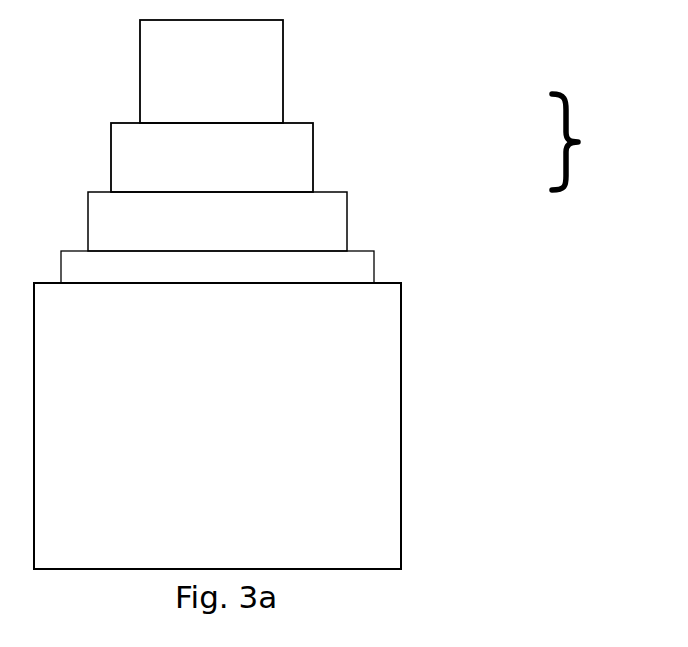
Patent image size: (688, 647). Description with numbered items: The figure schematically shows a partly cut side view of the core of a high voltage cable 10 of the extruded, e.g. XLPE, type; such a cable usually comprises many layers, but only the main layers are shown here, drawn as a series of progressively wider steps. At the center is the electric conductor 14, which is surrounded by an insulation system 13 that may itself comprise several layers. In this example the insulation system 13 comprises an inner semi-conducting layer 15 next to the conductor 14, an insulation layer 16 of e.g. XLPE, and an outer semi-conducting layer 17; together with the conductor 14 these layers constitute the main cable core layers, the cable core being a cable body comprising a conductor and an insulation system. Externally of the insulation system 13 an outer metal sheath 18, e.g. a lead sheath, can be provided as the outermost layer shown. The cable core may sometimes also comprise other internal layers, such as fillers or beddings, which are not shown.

The cable 10 is at (440, 415).
The insulation system 13 is at (595, 142).
The electric conductor 14 is at (283, 60).
The inner semi-conducting layer 15 is at (313, 153).
The insulation layer 16 is at (347, 205).
The outer semi-conducting layer 17 is at (374, 268).
The outer metal sheath 18 is at (401, 365).